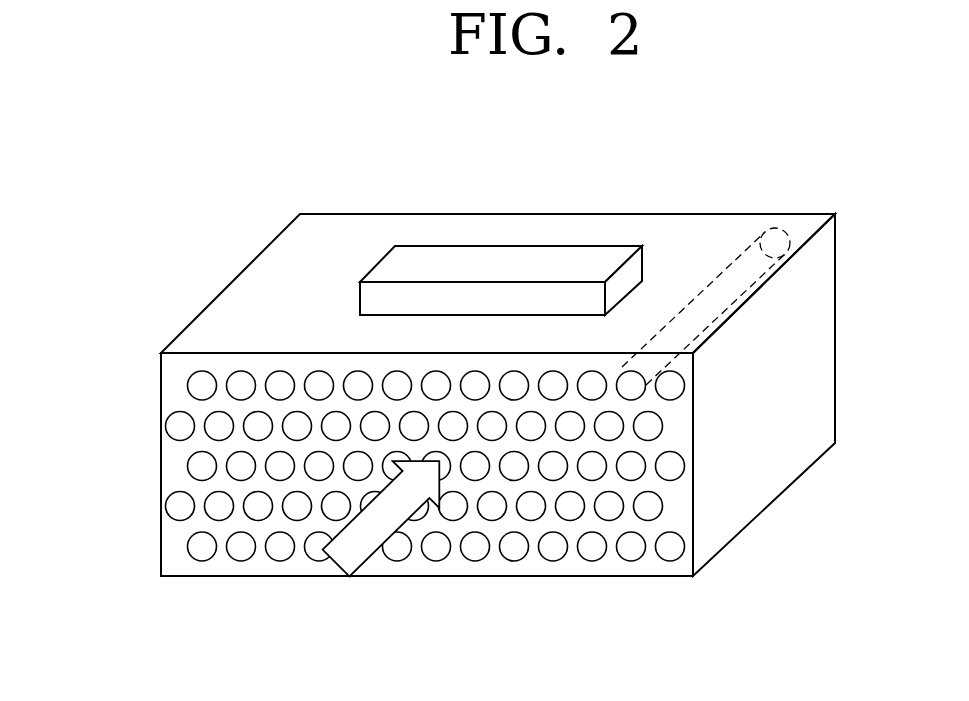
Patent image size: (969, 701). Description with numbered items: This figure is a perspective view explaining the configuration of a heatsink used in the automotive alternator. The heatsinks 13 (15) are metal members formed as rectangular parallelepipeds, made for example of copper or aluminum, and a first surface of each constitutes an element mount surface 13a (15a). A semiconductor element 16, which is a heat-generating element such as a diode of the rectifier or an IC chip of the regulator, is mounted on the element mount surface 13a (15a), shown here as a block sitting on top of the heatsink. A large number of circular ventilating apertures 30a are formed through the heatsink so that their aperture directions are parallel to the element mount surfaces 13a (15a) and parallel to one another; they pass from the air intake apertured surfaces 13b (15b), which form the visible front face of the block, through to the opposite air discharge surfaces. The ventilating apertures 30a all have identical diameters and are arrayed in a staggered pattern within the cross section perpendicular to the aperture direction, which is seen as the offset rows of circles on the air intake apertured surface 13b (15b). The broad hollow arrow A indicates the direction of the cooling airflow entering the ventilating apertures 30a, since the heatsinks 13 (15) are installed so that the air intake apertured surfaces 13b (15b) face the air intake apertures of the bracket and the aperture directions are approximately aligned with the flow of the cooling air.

The heatsink 13 is at (447, 337).
The heatsink 15 is at (447, 337).
The element mount surface 13a is at (466, 280).
The element mount surface 15a is at (273, 275).
The air intake apertured surface 13b is at (376, 422).
The air intake apertured surface 15b is at (173, 372).
The ventilating apertures 30a is at (172, 426).
The semiconductor element 16 is at (594, 254).
The air flow direction A is at (358, 552).